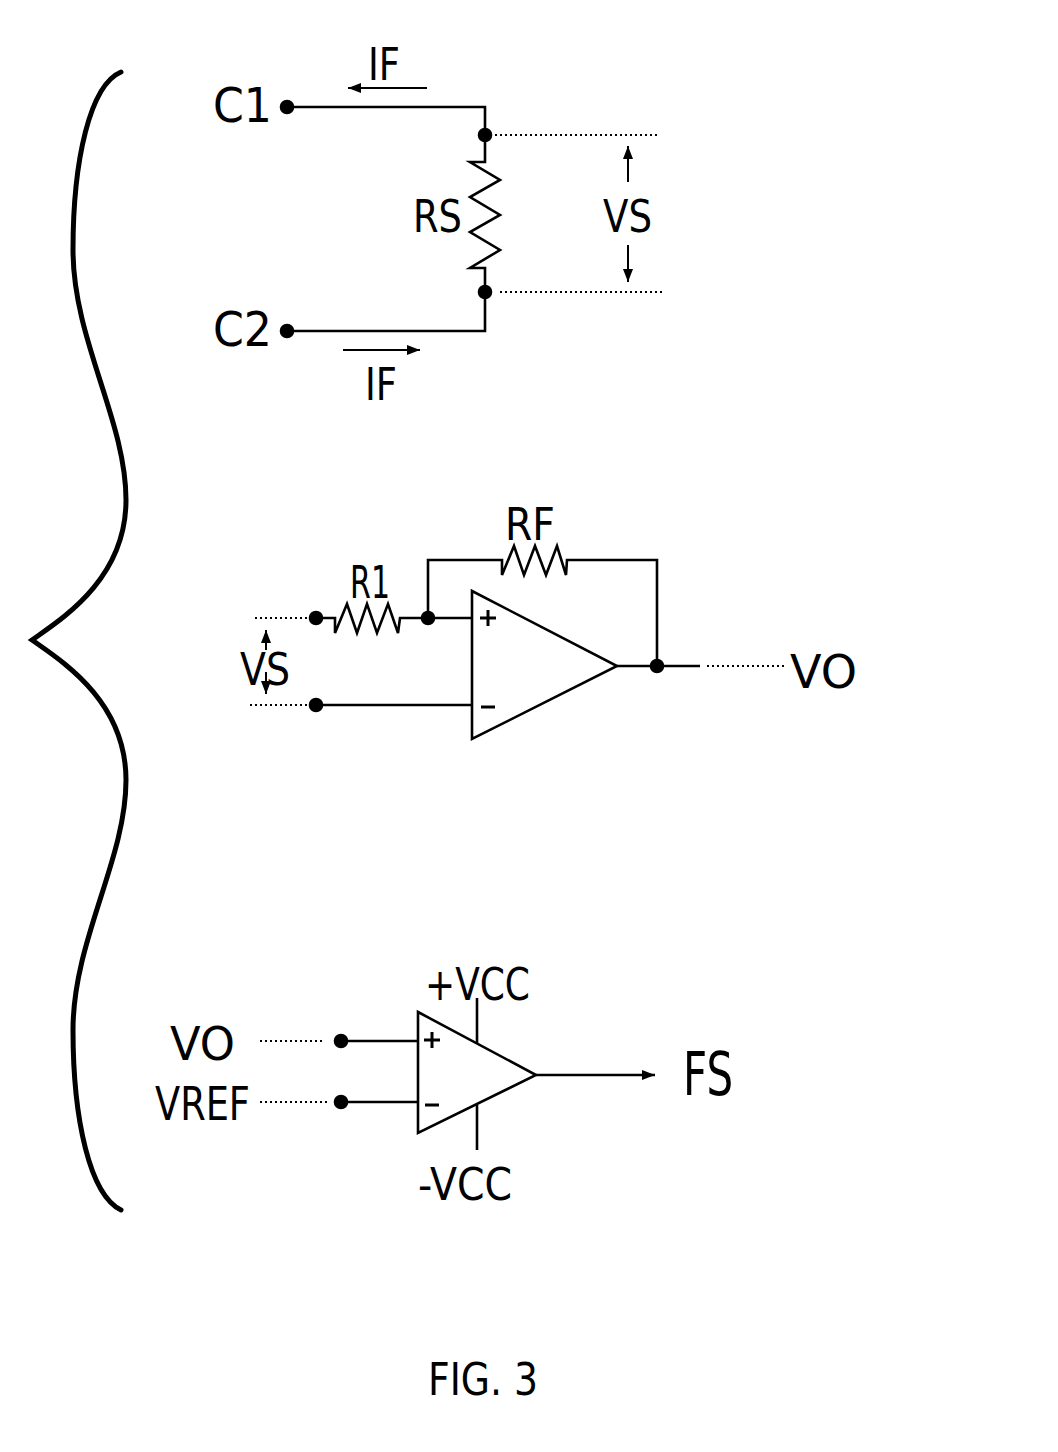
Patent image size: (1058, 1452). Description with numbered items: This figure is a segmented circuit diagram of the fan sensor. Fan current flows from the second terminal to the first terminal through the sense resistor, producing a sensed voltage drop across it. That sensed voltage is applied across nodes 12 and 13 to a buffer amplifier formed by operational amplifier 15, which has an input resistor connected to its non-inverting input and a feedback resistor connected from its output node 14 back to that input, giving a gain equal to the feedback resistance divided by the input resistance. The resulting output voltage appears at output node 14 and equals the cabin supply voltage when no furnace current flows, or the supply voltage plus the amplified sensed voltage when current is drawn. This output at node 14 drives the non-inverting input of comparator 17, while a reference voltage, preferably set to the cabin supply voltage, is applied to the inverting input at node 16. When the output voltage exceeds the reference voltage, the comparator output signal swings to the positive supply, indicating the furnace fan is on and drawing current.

The node 12 is at (496, 124).
The node 13 is at (506, 312).
The output node 14 is at (668, 655).
The operational amplifier 15 is at (529, 727).
The node 16 is at (325, 1113).
The comparator 17 is at (415, 1146).